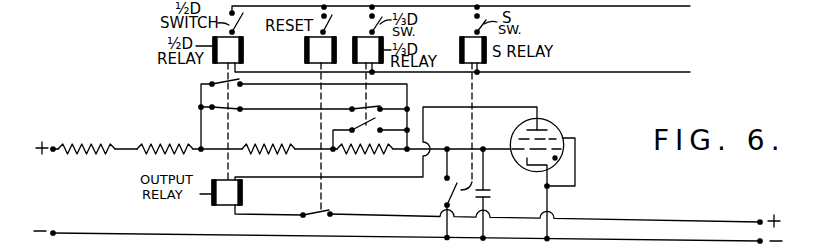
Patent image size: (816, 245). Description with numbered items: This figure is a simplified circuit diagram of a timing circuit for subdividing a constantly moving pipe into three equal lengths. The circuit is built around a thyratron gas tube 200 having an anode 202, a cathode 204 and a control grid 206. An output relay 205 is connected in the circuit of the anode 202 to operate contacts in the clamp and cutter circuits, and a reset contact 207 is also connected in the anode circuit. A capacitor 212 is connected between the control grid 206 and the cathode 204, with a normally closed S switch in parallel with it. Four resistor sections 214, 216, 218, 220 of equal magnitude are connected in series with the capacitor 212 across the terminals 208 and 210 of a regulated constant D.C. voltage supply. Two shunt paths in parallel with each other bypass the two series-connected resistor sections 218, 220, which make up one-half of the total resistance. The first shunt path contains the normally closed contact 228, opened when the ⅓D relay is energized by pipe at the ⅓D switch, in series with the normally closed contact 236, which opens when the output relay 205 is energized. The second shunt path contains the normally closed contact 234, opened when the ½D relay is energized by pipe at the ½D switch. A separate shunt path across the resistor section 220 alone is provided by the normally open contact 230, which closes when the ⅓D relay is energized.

The thyratron gas tube 200 is at (536, 162).
The anode 202 is at (540, 110).
The cathode 204 is at (547, 178).
The output relay 205 is at (204, 209).
The control grid 206 is at (495, 147).
The reset contact 207 is at (312, 217).
The terminal 208 is at (53, 147).
The terminal 210 is at (54, 232).
The capacitor 212 is at (502, 190).
The resistor section 214 is at (88, 143).
The resistor section 216 is at (165, 143).
The resistor section 218 is at (275, 143).
The resistor section 220 is at (374, 154).
The normally closed contact 228 is at (359, 107).
The normally open contact 230 is at (358, 128).
The normally closed contact 234 is at (210, 84).
The normally closed contact 236 is at (235, 103).